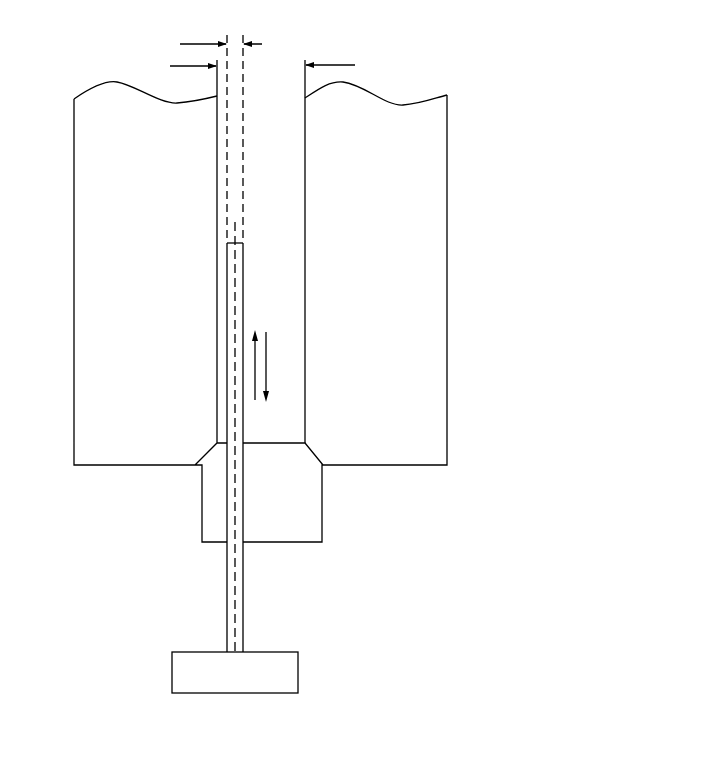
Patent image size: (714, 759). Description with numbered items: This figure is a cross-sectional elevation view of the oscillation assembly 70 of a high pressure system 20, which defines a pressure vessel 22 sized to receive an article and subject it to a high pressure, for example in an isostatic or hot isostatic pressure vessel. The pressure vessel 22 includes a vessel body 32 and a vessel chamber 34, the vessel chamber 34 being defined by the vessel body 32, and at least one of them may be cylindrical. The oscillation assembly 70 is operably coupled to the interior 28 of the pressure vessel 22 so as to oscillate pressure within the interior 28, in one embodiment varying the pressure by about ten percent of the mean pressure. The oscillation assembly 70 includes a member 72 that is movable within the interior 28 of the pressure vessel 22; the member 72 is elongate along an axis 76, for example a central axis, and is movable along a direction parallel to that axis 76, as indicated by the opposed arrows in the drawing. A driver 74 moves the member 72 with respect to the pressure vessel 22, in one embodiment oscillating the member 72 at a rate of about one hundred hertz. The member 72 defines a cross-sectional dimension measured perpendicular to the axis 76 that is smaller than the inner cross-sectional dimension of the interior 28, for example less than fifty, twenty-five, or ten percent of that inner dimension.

The high pressure system 20 is at (572, 189).
The pressure vessel 22 is at (459, 424).
The interior 28 is at (262, 272).
The vessel body 32 is at (418, 333).
The vessel chamber 34 is at (289, 140).
The oscillation assembly 70 is at (214, 607).
The member 72 is at (227, 575).
The driver 74 is at (172, 670).
The axis 76 is at (235, 222).